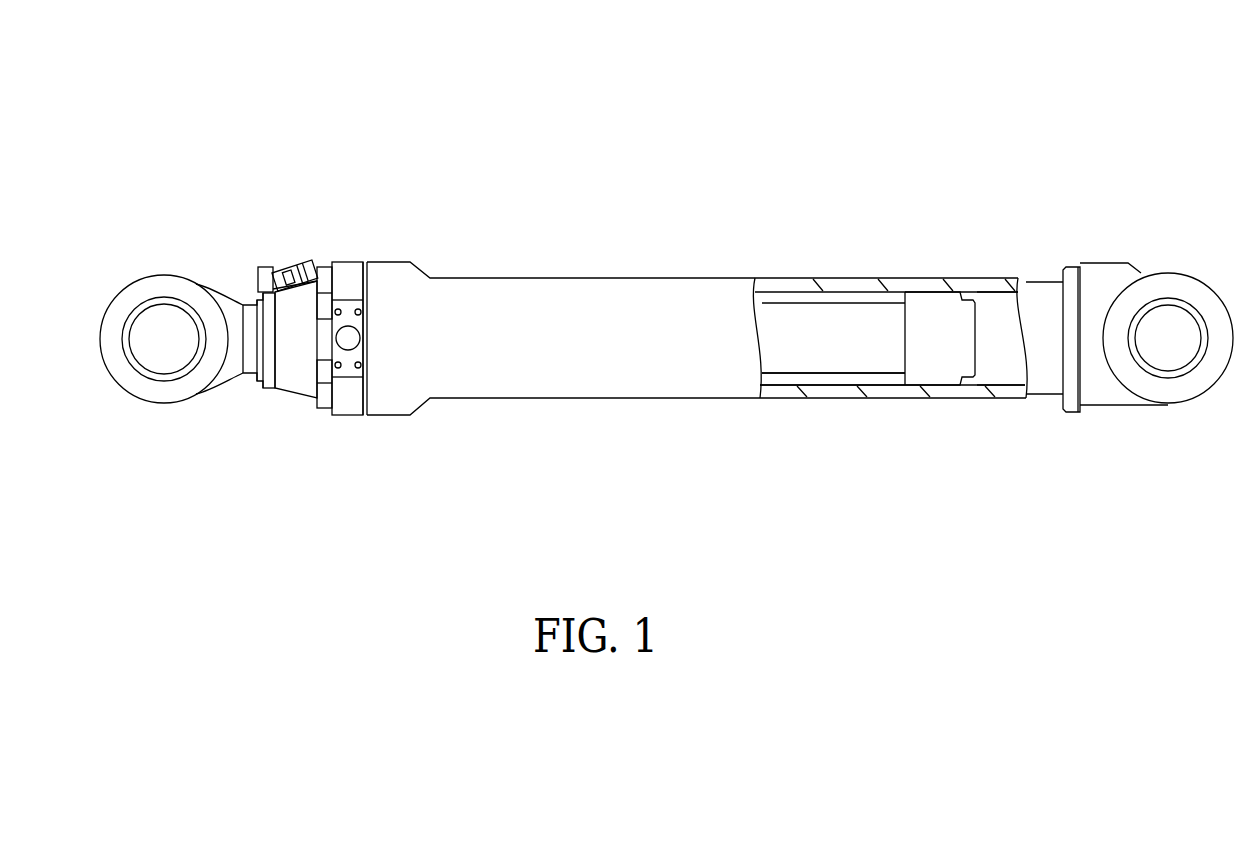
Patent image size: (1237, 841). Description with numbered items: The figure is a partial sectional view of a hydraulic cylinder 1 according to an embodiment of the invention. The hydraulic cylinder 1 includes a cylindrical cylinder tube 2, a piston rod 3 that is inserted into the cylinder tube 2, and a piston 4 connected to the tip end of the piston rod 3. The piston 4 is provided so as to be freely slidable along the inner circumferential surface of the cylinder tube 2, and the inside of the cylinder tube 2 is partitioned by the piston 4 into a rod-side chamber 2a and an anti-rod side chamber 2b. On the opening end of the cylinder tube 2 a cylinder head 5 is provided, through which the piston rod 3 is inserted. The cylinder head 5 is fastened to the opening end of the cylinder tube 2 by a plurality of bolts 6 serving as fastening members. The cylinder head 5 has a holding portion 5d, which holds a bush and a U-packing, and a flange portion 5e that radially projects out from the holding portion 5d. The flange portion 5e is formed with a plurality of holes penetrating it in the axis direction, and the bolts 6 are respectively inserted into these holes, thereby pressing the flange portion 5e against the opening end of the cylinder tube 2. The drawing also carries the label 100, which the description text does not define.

The hydraulic cylinder 1 is at (1011, 180).
The cylinder tube 2 is at (657, 310).
The rod-side chamber 2a is at (799, 378).
The anti-rod side chamber 2b is at (993, 378).
The piston rod 3 is at (833, 340).
The piston 4 is at (933, 303).
The cylinder head 5 is at (331, 420).
The holding portion 5d is at (292, 365).
The flange portion 5e is at (353, 395).
The bolts 6 is at (320, 283).
The sensor unit 100 is at (271, 254).